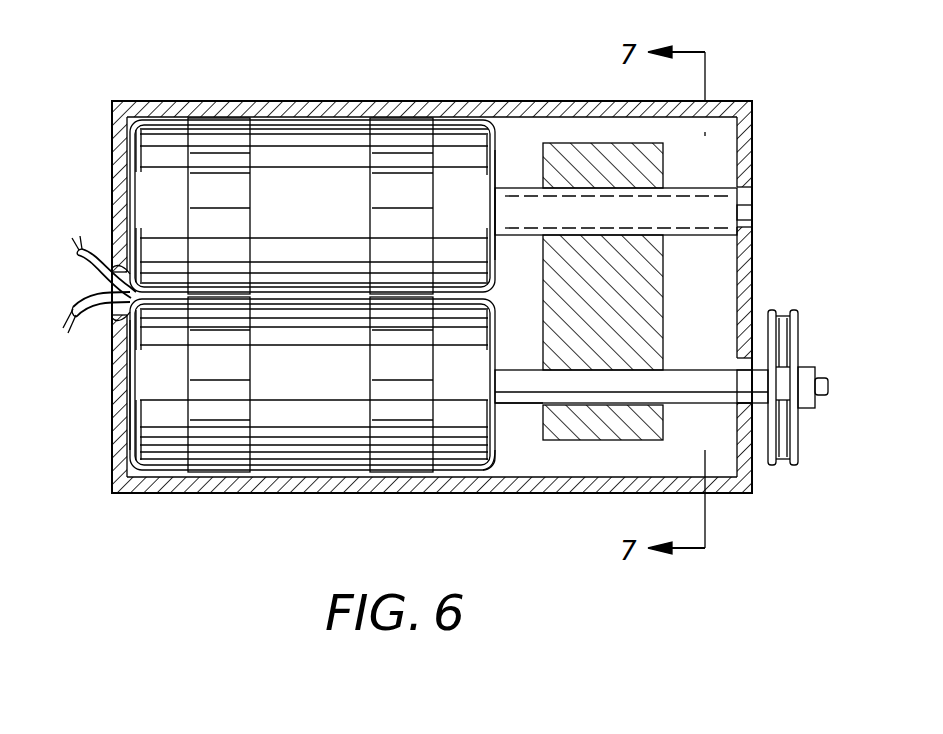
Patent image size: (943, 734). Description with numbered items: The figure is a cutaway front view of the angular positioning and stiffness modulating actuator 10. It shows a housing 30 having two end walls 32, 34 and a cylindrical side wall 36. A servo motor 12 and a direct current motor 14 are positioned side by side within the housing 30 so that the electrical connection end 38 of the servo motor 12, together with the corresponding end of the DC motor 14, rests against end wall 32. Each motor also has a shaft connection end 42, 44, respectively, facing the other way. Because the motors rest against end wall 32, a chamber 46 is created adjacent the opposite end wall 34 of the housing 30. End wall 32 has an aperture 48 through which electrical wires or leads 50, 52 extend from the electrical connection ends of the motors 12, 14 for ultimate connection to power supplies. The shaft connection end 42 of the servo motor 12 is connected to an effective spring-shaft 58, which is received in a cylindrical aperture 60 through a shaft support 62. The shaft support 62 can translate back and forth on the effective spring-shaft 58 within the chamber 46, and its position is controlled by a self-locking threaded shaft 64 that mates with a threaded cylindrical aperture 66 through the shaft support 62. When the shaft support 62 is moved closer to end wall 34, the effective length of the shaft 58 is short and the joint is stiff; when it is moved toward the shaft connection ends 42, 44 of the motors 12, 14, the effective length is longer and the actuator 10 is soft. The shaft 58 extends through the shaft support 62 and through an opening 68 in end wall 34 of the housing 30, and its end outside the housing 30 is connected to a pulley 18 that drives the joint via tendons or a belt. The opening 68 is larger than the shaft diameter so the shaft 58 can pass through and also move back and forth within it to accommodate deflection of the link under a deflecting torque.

The angular positioning and stiffness modulating actuator 10 is at (780, 66).
The servo motor 12 is at (155, 420).
The direct current motor 14 is at (152, 172).
The pulley 18 is at (790, 345).
The housing 30 is at (160, 102).
The end wall 32 is at (112, 340).
The end wall 34 is at (752, 152).
The cylindrical side wall 36 is at (333, 102).
The electrical connection end 38 is at (127, 390).
The shaft connection end 42 is at (495, 478).
The shaft connection end 44 is at (508, 185).
The chamber 46 is at (675, 467).
The aperture 48 is at (110, 268).
The electrical lead 50 is at (66, 300).
The electrical lead 52 is at (72, 258).
The effective spring-shaft 58 is at (633, 383).
The cylindrical aperture 60 is at (542, 405).
The shaft support 62 is at (583, 420).
The threaded shaft 64 is at (627, 203).
The threaded cylindrical aperture 66 is at (545, 188).
The opening 68 is at (738, 400).